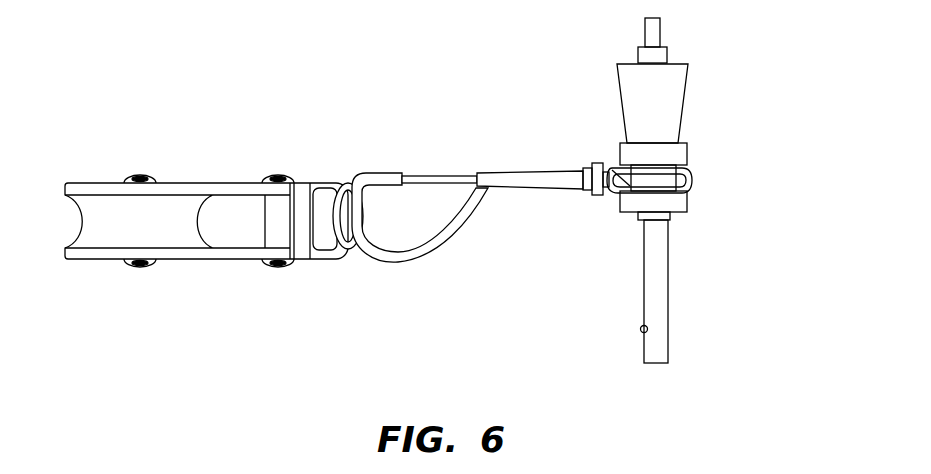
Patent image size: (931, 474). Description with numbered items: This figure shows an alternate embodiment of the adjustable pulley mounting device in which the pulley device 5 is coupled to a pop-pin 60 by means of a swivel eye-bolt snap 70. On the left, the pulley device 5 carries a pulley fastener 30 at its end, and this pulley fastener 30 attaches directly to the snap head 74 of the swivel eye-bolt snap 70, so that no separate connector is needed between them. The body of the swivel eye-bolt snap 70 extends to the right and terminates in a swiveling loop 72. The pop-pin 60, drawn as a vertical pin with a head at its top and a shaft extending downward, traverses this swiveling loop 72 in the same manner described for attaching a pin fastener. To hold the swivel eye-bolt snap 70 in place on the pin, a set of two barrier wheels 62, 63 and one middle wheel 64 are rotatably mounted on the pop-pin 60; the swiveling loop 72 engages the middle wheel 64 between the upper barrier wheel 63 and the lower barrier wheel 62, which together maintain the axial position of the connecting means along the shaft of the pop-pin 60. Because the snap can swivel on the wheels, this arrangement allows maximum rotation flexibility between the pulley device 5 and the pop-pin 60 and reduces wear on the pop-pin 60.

The pulley device 5 is at (155, 285).
The pulley fastener 30 is at (322, 259).
The snap head 74 is at (378, 264).
The swivel eye-bolt snap 70 is at (500, 222).
The swiveling loop 72 is at (598, 162).
The pop-pin 60 is at (697, 290).
The barrier wheel 63 is at (688, 153).
The barrier wheel 62 is at (688, 200).
The middle wheel 64 is at (614, 195).